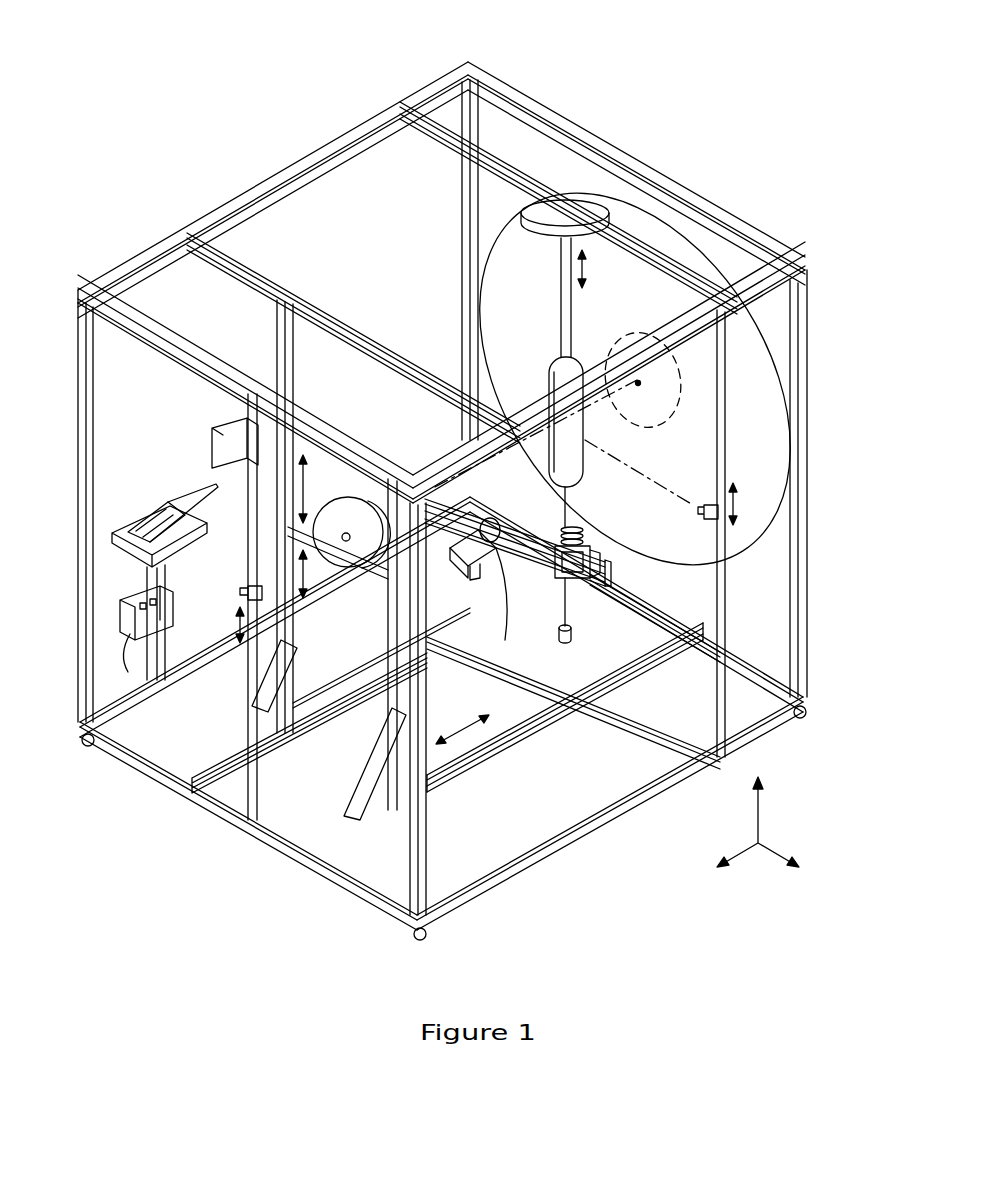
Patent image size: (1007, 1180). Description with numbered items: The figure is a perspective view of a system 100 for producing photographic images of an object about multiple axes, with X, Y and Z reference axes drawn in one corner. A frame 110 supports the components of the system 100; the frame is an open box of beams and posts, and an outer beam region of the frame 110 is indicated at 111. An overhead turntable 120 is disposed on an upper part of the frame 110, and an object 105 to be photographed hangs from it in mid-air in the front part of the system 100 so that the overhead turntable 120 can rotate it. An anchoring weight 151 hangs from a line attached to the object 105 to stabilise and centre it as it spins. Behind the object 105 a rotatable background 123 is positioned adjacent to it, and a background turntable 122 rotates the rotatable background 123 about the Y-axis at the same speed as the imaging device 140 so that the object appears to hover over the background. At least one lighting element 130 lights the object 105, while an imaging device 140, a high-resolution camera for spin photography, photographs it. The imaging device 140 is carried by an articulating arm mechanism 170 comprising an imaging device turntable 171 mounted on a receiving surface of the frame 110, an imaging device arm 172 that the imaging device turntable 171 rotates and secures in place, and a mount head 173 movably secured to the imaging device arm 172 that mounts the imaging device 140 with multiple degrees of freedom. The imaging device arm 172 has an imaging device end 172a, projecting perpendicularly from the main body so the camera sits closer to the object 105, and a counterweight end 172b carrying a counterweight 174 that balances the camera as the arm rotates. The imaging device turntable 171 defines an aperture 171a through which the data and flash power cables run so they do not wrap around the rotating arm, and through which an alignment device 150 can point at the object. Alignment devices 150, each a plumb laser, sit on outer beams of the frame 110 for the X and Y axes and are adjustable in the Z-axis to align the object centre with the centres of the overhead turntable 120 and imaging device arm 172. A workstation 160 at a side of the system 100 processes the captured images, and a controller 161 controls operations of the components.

The system 100 is at (256, 111).
The object 105 is at (573, 445).
The frame 110 is at (200, 215).
The side panel 111 is at (747, 417).
The overhead turntable 120 is at (570, 210).
The background turntable 122 is at (615, 338).
The rotatable background 123 is at (693, 247).
The lighting element 130 is at (480, 565).
The imaging device 140 is at (593, 550).
The alignment device 150 is at (250, 593).
The anchoring weight 151 is at (697, 625).
The workstation 160 is at (110, 540).
The controller 161 is at (122, 592).
The articulating arm mechanism 170 is at (350, 545).
The imaging device turntable 171 is at (350, 517).
The aperture 171a is at (349, 545).
The imaging device arm 172 is at (479, 595).
The imaging device end 172a is at (545, 562).
The counterweight end 172b is at (265, 470).
The mount head 173 is at (572, 632).
The counterweight 174 is at (225, 432).